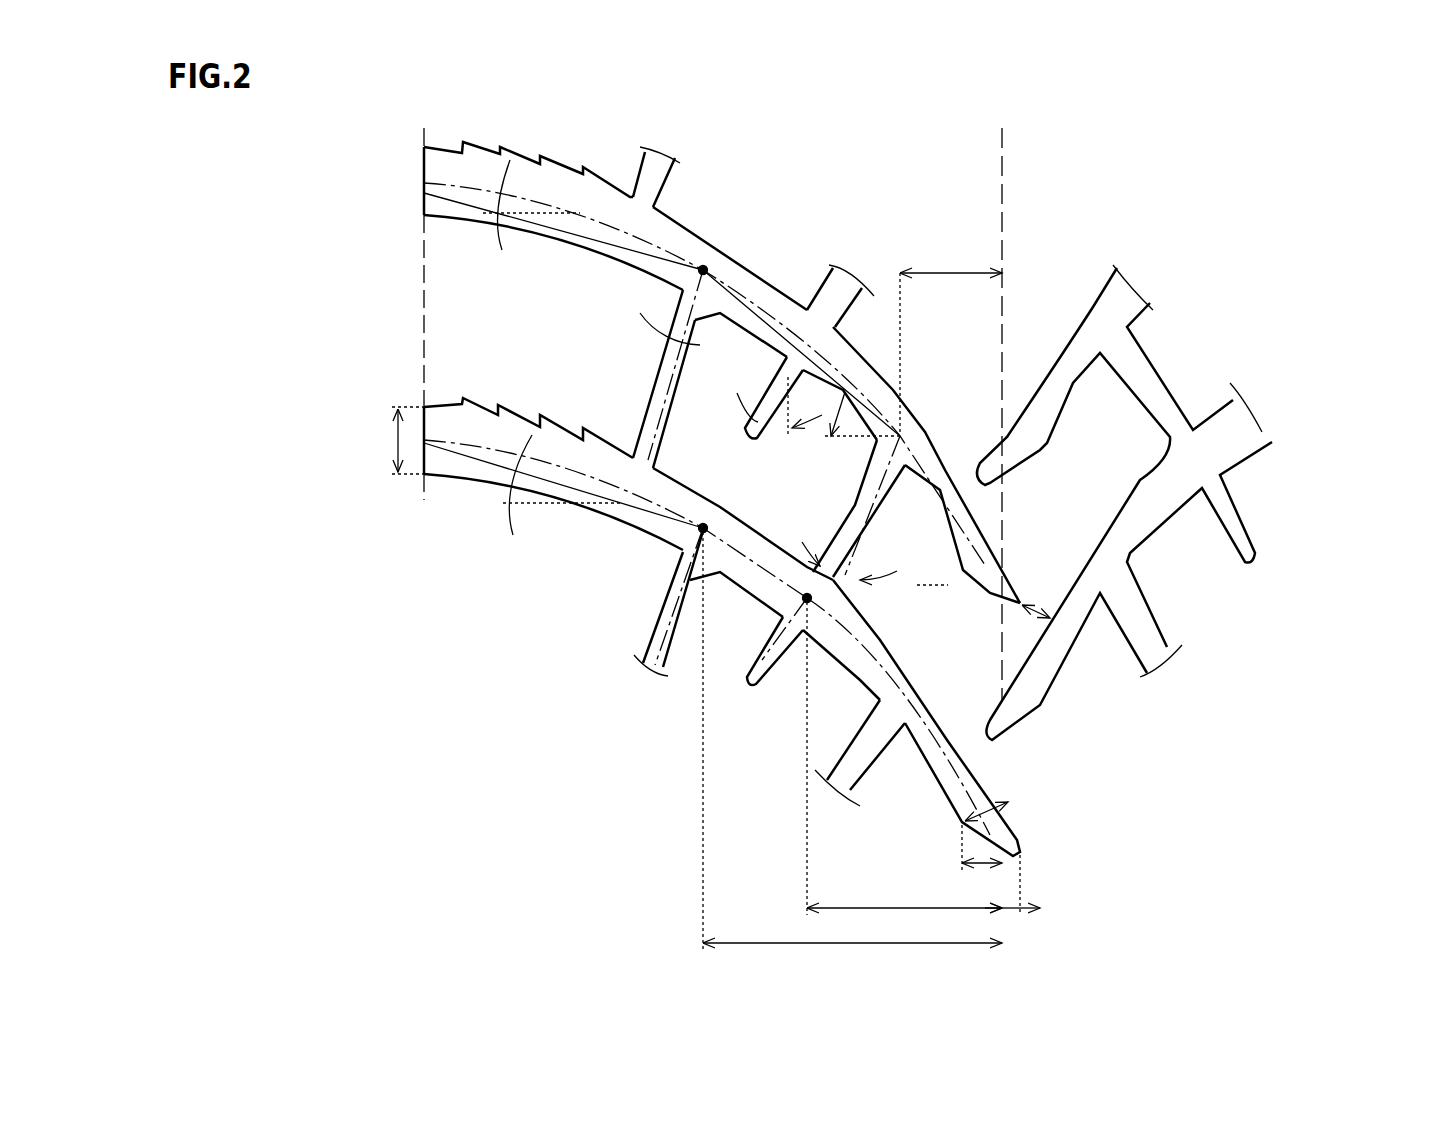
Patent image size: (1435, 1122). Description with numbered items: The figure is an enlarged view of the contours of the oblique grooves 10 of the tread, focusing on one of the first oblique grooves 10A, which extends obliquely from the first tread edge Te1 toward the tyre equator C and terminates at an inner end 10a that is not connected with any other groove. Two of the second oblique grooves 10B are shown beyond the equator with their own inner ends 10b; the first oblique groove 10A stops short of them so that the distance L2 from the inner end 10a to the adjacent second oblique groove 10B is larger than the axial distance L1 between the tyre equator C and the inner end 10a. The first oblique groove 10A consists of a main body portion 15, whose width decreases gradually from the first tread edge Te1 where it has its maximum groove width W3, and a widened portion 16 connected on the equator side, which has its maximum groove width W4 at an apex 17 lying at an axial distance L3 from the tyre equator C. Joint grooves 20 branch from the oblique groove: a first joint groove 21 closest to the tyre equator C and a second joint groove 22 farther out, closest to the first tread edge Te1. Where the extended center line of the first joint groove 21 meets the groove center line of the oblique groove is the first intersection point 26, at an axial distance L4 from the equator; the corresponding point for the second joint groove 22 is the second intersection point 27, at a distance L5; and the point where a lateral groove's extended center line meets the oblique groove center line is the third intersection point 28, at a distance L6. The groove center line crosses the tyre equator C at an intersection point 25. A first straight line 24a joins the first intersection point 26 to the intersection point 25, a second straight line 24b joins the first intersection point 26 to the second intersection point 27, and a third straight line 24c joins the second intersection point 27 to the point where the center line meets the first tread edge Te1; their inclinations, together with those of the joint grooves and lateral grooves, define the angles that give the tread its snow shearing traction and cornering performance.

The oblique grooves 10 is at (722, 404).
The first oblique grooves 10A is at (735, 617).
The second oblique grooves 10B is at (1150, 529).
The inner end 10a is at (1020, 608).
The inner end 10b is at (984, 468).
The main body portion 15 is at (603, 212).
The widened portion 16 is at (988, 545).
The apex 17 is at (958, 822).
The joint grooves 20 is at (918, 495).
The first joint grooves 21 is at (871, 742).
The second joint grooves 22 is at (660, 425).
The first straight line 24a is at (948, 520).
The second straight line 24b is at (753, 310).
The third straight line 24c is at (650, 508).
The intersection point 25 is at (935, 585).
The first intersection point 26 is at (897, 440).
The second intersection point 27 is at (703, 266).
The third intersection point 28 is at (803, 600).
The first tread edge Te1 is at (427, 297).
The tyre equator C is at (999, 397).
The maximum groove width of main body portion W3 is at (384, 440).
The maximum groove width of widened portion W4 is at (1000, 810).
The distance L1 is at (1015, 904).
The distance L2 is at (1035, 603).
The distance L3 is at (982, 864).
The distance L4 is at (951, 333).
The distance L5 is at (852, 758).
The distance L6 is at (904, 774).